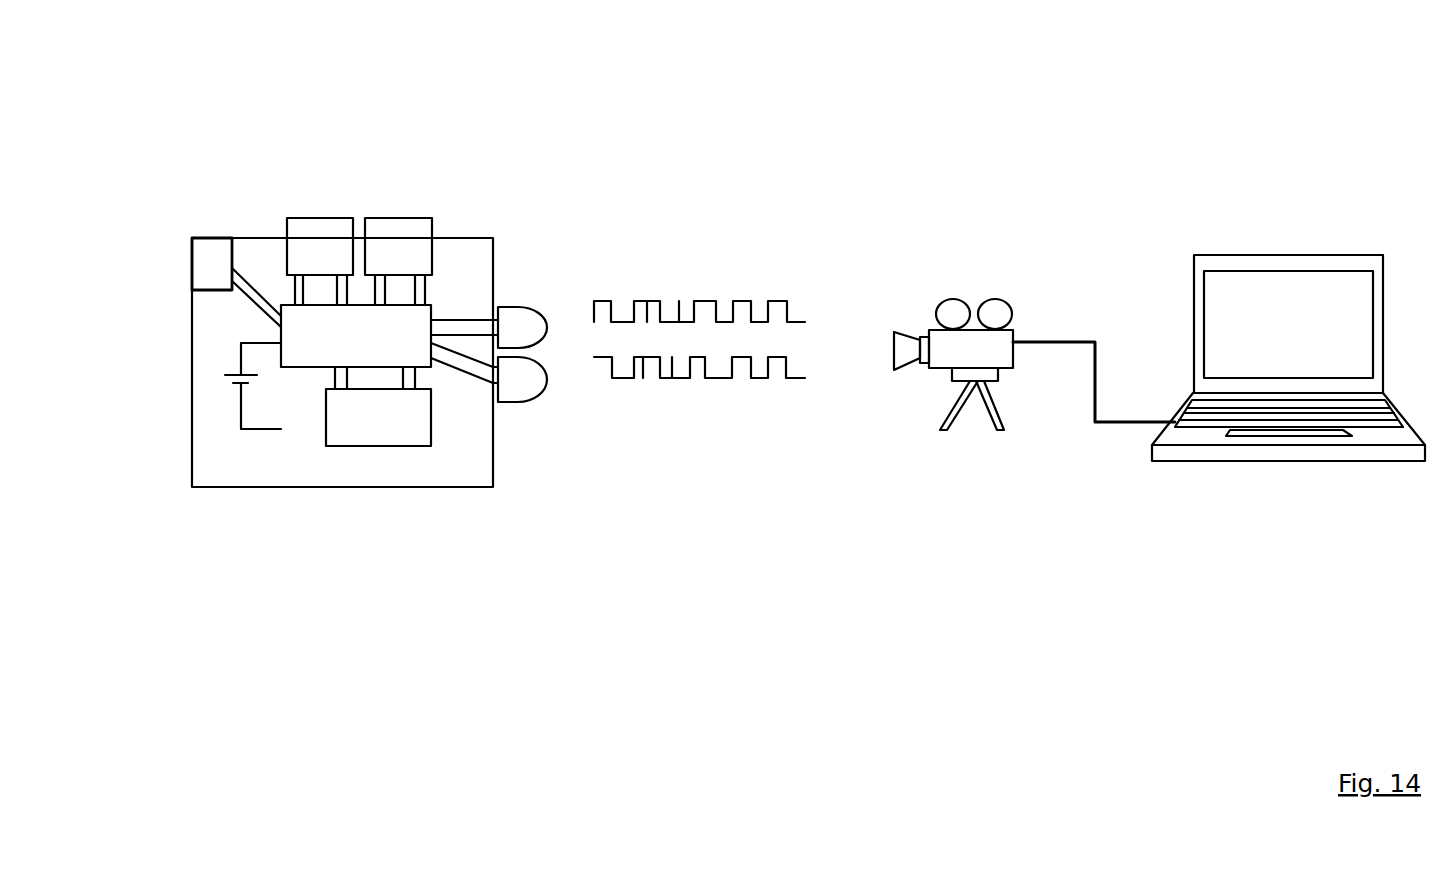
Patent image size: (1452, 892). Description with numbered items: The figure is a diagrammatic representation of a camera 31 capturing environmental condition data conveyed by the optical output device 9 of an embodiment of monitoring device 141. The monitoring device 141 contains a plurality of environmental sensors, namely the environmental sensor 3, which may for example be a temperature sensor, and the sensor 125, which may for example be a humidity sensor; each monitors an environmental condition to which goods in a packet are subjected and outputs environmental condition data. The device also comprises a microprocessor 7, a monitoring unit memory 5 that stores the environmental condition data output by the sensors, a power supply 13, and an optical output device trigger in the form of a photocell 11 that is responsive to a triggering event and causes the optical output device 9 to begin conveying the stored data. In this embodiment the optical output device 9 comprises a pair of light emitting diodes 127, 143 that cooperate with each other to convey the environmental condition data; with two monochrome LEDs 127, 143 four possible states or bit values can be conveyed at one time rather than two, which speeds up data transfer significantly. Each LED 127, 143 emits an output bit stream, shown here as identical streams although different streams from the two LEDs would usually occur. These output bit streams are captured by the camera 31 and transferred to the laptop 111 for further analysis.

The monitoring device 141 is at (173, 197).
The photocell 11 is at (215, 237).
The humidity sensor 125 is at (328, 225).
The environmental sensor 3 is at (418, 232).
The microprocessor 7 is at (310, 355).
The monitoring unit memory 5 is at (399, 425).
The power supply 13 is at (227, 380).
The light emitting diode 127 is at (522, 322).
The light emitting diode 143 is at (522, 415).
The optical output device 9 is at (576, 288).
The camera 31 is at (1000, 362).
The laptop 111 is at (1303, 457).